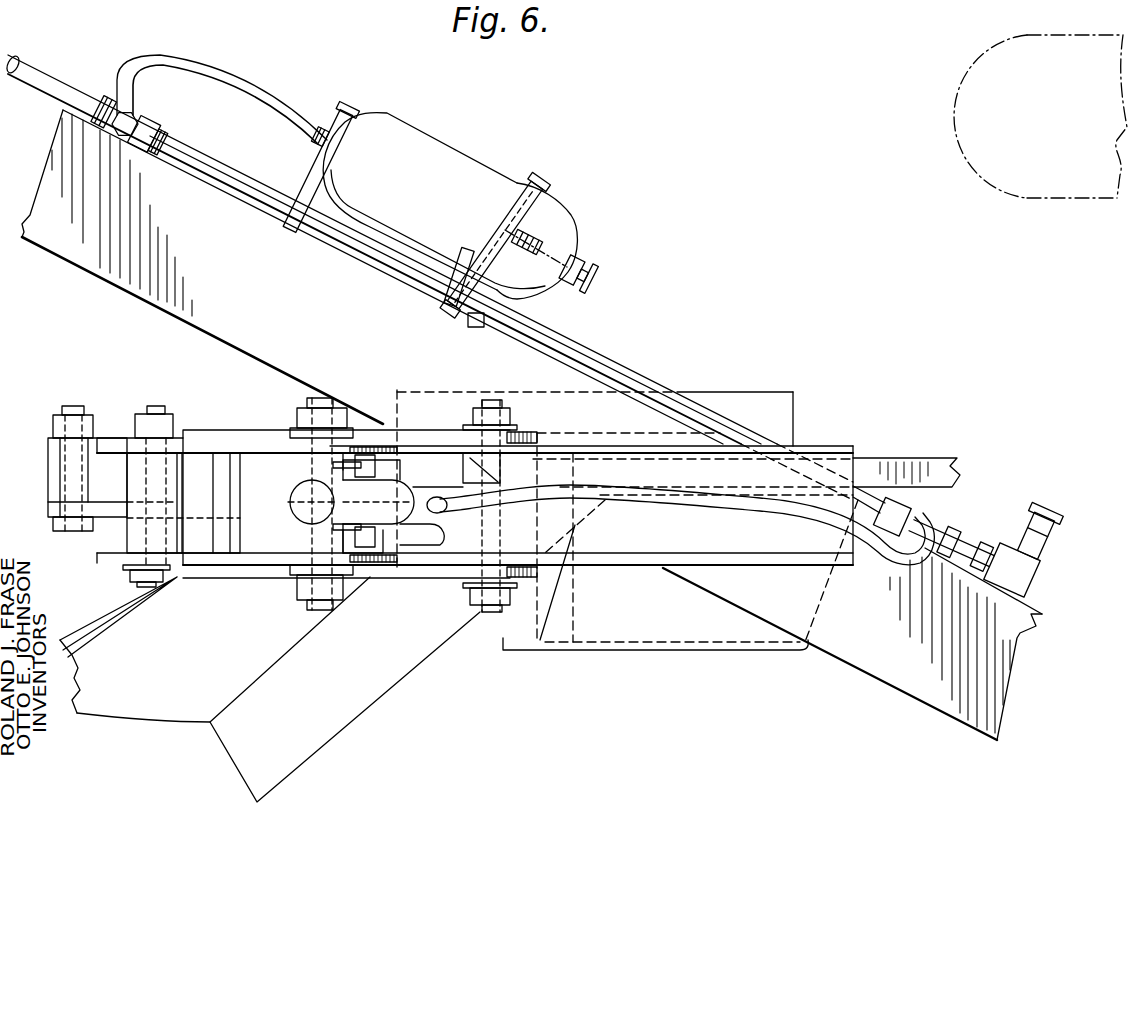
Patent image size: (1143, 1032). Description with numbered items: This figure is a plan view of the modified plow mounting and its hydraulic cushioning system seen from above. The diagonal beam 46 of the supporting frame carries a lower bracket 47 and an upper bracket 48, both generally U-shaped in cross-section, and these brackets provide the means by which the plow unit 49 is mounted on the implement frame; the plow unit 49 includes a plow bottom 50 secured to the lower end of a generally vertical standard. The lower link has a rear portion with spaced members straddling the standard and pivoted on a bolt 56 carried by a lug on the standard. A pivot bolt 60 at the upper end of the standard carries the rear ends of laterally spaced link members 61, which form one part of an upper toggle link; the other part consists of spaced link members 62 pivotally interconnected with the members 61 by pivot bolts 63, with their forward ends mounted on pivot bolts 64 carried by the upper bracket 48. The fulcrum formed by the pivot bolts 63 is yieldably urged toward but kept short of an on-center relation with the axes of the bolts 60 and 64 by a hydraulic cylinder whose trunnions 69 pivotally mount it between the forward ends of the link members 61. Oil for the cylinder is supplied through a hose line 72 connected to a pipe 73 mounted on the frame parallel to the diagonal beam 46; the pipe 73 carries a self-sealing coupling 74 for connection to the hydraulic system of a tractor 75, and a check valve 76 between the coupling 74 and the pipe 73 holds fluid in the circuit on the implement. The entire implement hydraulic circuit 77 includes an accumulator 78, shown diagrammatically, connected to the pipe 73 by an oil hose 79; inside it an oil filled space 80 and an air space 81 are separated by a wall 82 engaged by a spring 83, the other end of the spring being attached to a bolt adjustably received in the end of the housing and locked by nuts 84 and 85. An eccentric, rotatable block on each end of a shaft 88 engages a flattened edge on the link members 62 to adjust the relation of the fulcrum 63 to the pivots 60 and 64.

The diagonal beam 46 is at (118, 257).
The lower bracket 47 is at (643, 652).
The upper bracket 48 is at (826, 447).
The plow unit 49 is at (389, 716).
The plow bottom 50 is at (118, 685).
The bolt 56 is at (74, 522).
The pivot bolt 60 is at (158, 578).
The link members 61 is at (108, 436).
The link members 62 is at (245, 432).
The pivot bolts 63 is at (318, 396).
The pivot bolts 64 is at (490, 396).
The trunnions 69 is at (392, 440).
The hose line 72 is at (724, 510).
The pipe 73 is at (700, 412).
The coupling 74 is at (1047, 538).
The tractor 75 is at (960, 62).
The check valve 76 is at (1027, 590).
The hydraulic circuit 77 is at (697, 367).
The accumulator 78 is at (430, 123).
The oil hose 79 is at (262, 102).
The oil filled space 80 is at (455, 168).
The air space 81 is at (561, 217).
The wall 82 is at (506, 196).
The spring 83 is at (534, 292).
The nut 84 is at (582, 233).
The nut 85 is at (578, 262).
The shaft 88 is at (244, 506).